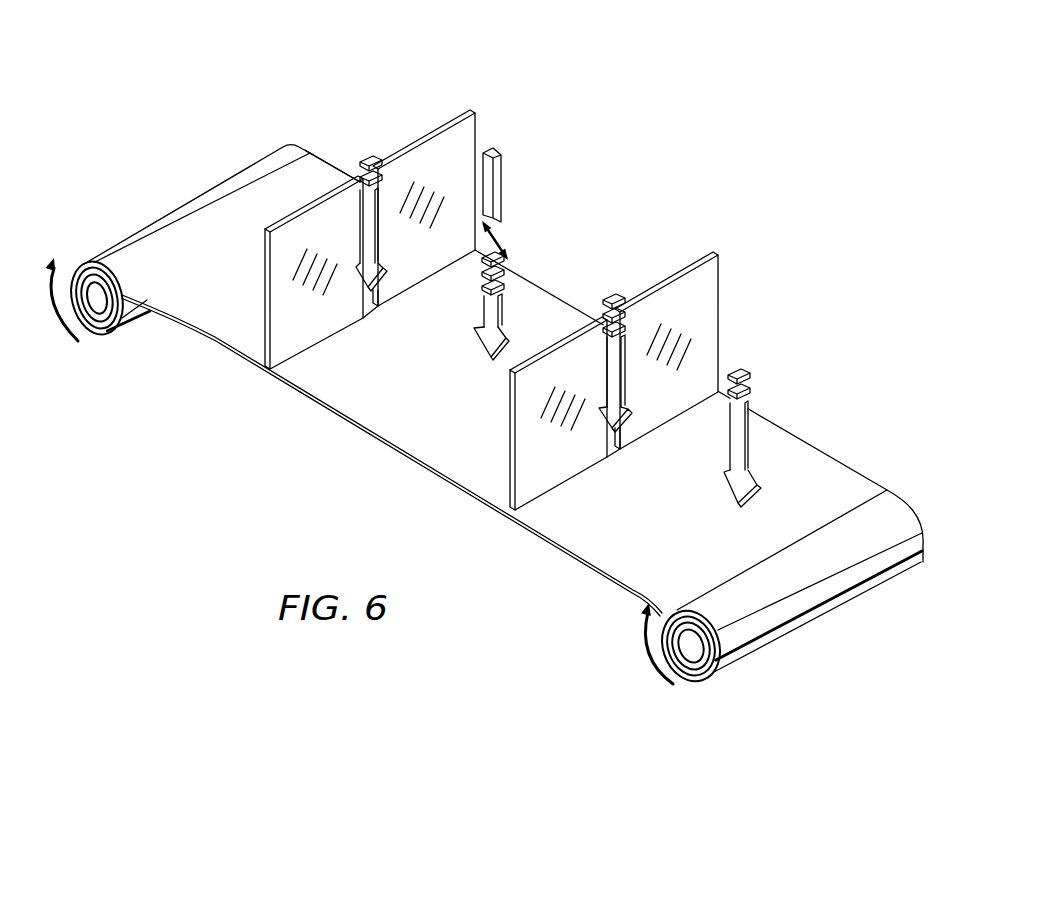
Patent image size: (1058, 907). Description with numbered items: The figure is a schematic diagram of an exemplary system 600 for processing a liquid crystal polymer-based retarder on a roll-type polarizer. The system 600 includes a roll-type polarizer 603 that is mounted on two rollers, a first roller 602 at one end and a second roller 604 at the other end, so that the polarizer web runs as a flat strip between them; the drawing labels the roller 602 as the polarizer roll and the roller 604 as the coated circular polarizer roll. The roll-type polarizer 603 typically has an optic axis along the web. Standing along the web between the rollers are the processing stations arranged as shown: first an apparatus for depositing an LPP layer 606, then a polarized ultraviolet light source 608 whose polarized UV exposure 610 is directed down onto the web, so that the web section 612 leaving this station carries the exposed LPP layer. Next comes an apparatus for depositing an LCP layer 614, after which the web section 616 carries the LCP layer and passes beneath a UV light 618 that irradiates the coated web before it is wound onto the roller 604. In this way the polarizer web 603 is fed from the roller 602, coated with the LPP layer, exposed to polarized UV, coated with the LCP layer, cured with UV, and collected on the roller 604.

The system 600 is at (672, 166).
The roller 602 is at (100, 341).
The roll-type polarizer 603 is at (224, 324).
The roller 604 is at (692, 688).
The apparatus for depositing an LPP layer 606 is at (266, 266).
The polarized ultraviolet light source 608 is at (502, 187).
The polarized UV exposure 610 is at (500, 243).
The LPP coated web 612 is at (399, 429).
The apparatus for depositing an LCP layer 614 is at (510, 407).
The LCP coated web 616 is at (619, 549).
The UV light 618 is at (732, 487).